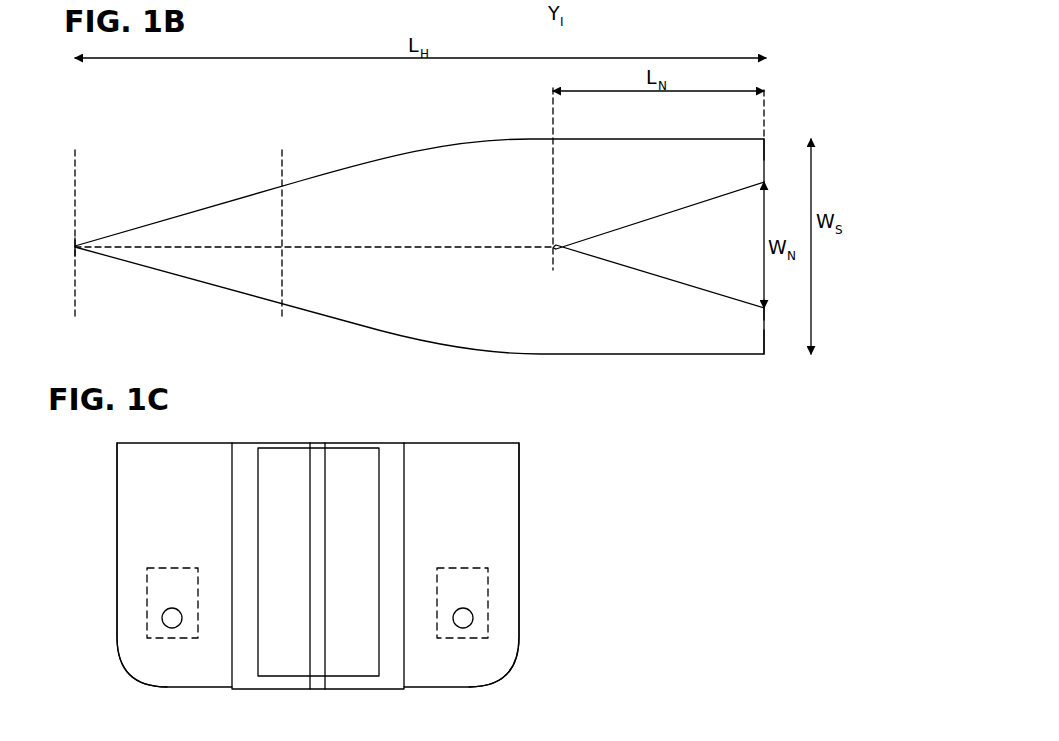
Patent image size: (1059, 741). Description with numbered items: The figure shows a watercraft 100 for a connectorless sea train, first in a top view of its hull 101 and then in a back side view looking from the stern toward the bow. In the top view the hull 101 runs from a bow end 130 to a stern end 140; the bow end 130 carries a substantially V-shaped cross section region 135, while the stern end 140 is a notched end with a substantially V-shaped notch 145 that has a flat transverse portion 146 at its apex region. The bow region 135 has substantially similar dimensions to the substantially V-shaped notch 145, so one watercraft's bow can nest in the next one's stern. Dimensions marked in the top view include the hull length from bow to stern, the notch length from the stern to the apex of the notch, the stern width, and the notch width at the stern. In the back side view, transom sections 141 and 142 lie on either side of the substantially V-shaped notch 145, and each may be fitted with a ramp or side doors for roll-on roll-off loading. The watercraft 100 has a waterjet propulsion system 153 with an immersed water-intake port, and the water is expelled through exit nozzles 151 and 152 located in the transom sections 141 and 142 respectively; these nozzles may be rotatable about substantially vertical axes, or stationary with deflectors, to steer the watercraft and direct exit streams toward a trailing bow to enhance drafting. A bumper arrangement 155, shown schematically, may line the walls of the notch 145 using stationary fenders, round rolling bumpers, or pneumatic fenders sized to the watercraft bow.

In FIG. 1B, the watercraft 100 is at (415, 122).
In FIG. 1B, the hull 101 is at (415, 240).
In FIG. 1B, the bow end 130 is at (73, 245).
In FIG. 1B, the substantially V-shaped cross section region 135 is at (282, 155).
In FIG. 1B, the stern end 140 is at (768, 327).
In FIG. 1B, the transom section 141 is at (766, 339).
In FIG. 1C, the transom section 141 is at (140, 517).
In FIG. 1B, the transom section 142 is at (766, 153).
In FIG. 1C, the transom section 142 is at (503, 472).
In FIG. 1B, the substantially V-shaped notch 145 is at (640, 246).
In FIG. 1C, the substantially V-shaped notch 145 is at (404, 440).
In FIG. 1C, the flat transverse portion 146 is at (318, 680).
In FIG. 1C, the exit nozzle 151 is at (162, 618).
In FIG. 1C, the exit nozzle 152 is at (474, 618).
In FIG. 1C, the propulsion system 153 is at (170, 573).
In FIG. 1C, the bumper arrangement 155 is at (286, 660).